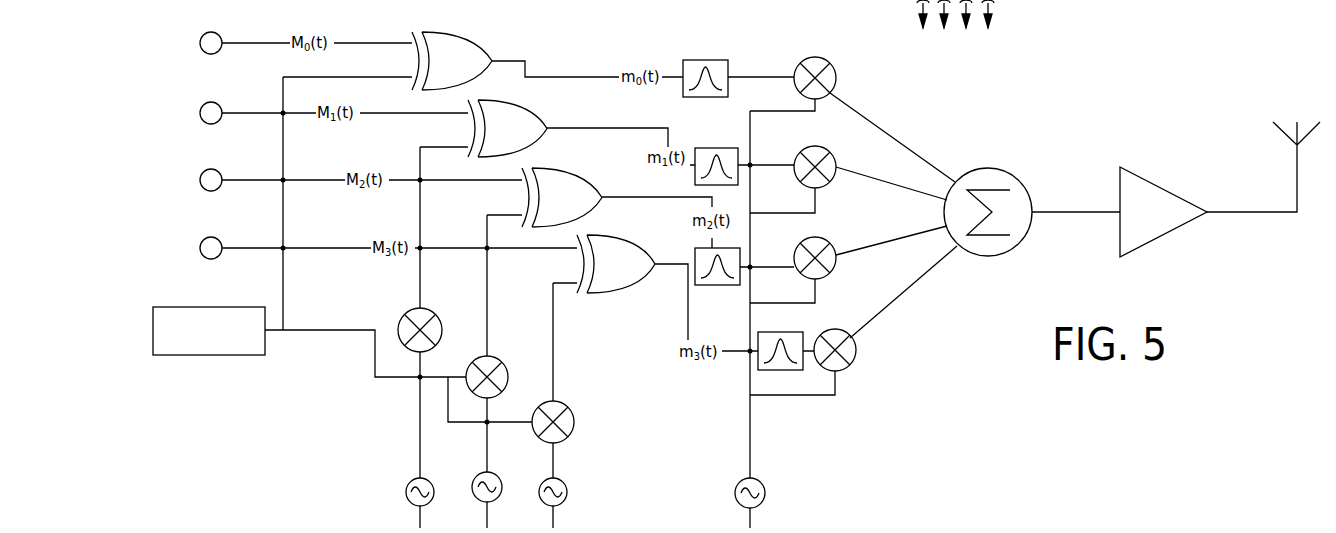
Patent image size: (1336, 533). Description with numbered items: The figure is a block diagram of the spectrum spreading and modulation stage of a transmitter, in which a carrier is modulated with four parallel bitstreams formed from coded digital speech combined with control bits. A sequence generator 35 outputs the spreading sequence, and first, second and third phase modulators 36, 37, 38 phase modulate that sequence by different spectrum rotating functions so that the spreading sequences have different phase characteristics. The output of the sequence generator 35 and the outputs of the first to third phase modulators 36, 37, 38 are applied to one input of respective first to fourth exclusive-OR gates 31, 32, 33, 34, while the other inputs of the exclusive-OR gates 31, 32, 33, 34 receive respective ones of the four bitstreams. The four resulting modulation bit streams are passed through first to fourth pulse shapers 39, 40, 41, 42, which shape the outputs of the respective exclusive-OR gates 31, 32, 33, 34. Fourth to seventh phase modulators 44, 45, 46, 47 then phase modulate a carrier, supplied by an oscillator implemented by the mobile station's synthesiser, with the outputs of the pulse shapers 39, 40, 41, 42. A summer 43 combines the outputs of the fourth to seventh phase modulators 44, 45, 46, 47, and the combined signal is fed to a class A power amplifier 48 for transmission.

The first exclusive-OR gate 31 is at (467, 53).
The second exclusive-OR gate 32 is at (523, 123).
The third exclusive-OR gate 33 is at (563, 198).
The fourth exclusive-OR gate 34 is at (613, 262).
The sequence generator 35 is at (255, 343).
The first phase modulator 36 is at (427, 325).
The second phase modulator 37 is at (492, 362).
The third phase modulator 38 is at (557, 408).
The first pulse shaper 39 is at (723, 62).
The second pulse shaper 40 is at (698, 152).
The third pulse shaper 41 is at (708, 277).
The fourth pulse shaper 42 is at (792, 340).
The summer 43 is at (1018, 195).
The fourth phase modulator 44 is at (828, 72).
The fifth phase modulator 45 is at (832, 162).
The sixth phase modulator 46 is at (827, 252).
The seventh phase modulator 47 is at (855, 358).
The class A power amplifier 48 is at (1150, 193).